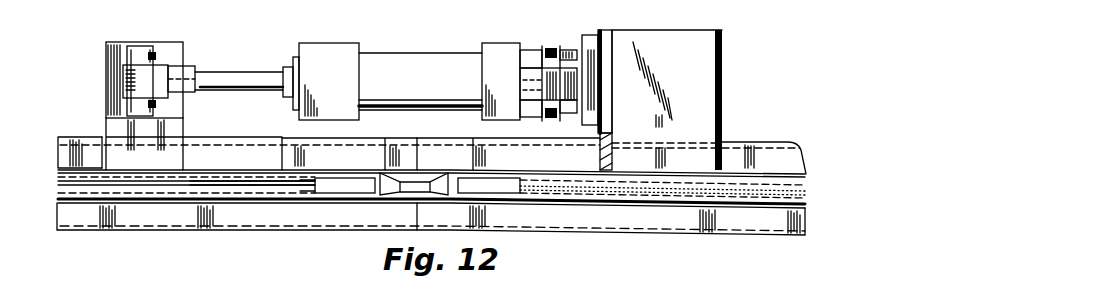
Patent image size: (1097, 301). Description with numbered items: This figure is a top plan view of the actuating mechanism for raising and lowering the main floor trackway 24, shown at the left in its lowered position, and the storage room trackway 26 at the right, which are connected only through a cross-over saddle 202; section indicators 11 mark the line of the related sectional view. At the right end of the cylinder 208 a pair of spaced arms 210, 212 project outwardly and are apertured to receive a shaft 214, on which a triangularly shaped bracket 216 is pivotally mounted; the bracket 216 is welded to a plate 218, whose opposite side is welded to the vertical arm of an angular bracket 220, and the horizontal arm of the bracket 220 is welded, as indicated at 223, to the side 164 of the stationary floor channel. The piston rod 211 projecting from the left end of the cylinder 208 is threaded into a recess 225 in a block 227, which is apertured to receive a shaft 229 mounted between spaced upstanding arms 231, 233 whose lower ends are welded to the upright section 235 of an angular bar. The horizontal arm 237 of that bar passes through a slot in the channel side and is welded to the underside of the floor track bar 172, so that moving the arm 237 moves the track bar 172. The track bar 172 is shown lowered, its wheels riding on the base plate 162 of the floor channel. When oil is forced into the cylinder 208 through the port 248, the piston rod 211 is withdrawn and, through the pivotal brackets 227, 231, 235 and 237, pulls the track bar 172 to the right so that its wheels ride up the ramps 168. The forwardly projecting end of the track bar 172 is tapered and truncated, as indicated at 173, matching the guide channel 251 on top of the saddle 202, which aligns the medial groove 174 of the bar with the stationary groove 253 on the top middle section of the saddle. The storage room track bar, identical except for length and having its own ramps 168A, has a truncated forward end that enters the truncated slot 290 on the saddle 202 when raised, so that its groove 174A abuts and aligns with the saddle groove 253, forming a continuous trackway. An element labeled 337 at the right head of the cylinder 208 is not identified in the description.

The section line 11 is at (45, 183).
The main floor trackway 24 is at (121, 236).
The storage room trackway 26 is at (664, 238).
The base plate 162 is at (243, 150).
The side of floor channel 164 is at (649, 172).
The ramps 168 is at (331, 191).
The ramps 168A is at (495, 192).
The floor track bar 172 is at (211, 190).
The tapered truncated end 173 is at (295, 194).
The medial groove 174 is at (176, 186).
The medial groove 174A is at (727, 190).
The cross-over saddle 202 is at (374, 176).
The cylinder 208 is at (437, 38).
The arm 210 is at (524, 116).
The piston rod 211 is at (257, 70).
The arm 212 is at (535, 48).
The shaft 214 is at (552, 48).
The triangularly shaped bracket 216 is at (574, 112).
The plate 218 is at (586, 36).
The angular bracket 220 is at (602, 38).
The weld 223 is at (590, 168).
The recess 225 is at (190, 65).
The block 227 is at (130, 82).
The shaft 229 is at (140, 45).
The upstanding arm 231 is at (158, 104).
The upstanding arm 233 is at (153, 52).
The upright section 235 is at (110, 53).
The horizontal arm 237 is at (175, 150).
The port 248 is at (338, 58).
The guide channel 251 is at (390, 194).
The saddle groove 253 is at (420, 184).
The truncated slot 290 is at (437, 192).
The cylinder head 337 is at (510, 58).